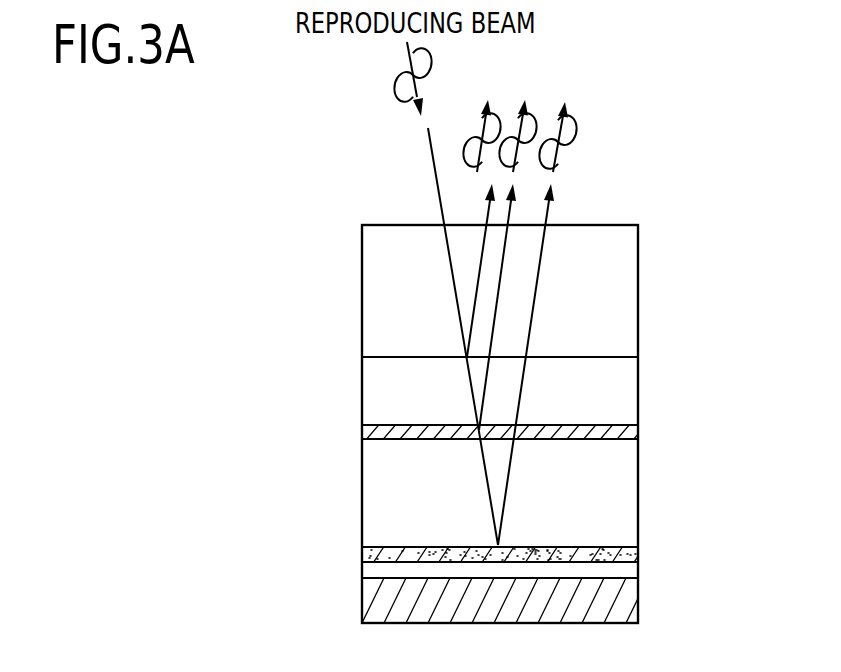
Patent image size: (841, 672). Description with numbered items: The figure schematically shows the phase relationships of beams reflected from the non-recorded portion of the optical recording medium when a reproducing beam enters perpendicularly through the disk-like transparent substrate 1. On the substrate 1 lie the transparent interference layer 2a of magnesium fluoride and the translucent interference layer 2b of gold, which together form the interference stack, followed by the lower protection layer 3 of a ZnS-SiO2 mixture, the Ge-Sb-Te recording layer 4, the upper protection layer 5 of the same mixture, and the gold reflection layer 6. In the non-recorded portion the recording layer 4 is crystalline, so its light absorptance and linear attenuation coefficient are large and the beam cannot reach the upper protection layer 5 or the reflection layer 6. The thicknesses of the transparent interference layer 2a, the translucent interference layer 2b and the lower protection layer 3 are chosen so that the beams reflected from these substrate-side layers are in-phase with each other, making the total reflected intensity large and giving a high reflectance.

The transparent substrate 1 is at (623, 289).
The transparent interference layer 2a is at (623, 395).
The translucent interference layer 2b is at (630, 433).
The lower protection layer 3 is at (625, 490).
The recording layer 4 is at (630, 555).
The upper protection layer 5 is at (627, 568).
The reflection layer 6 is at (623, 603).